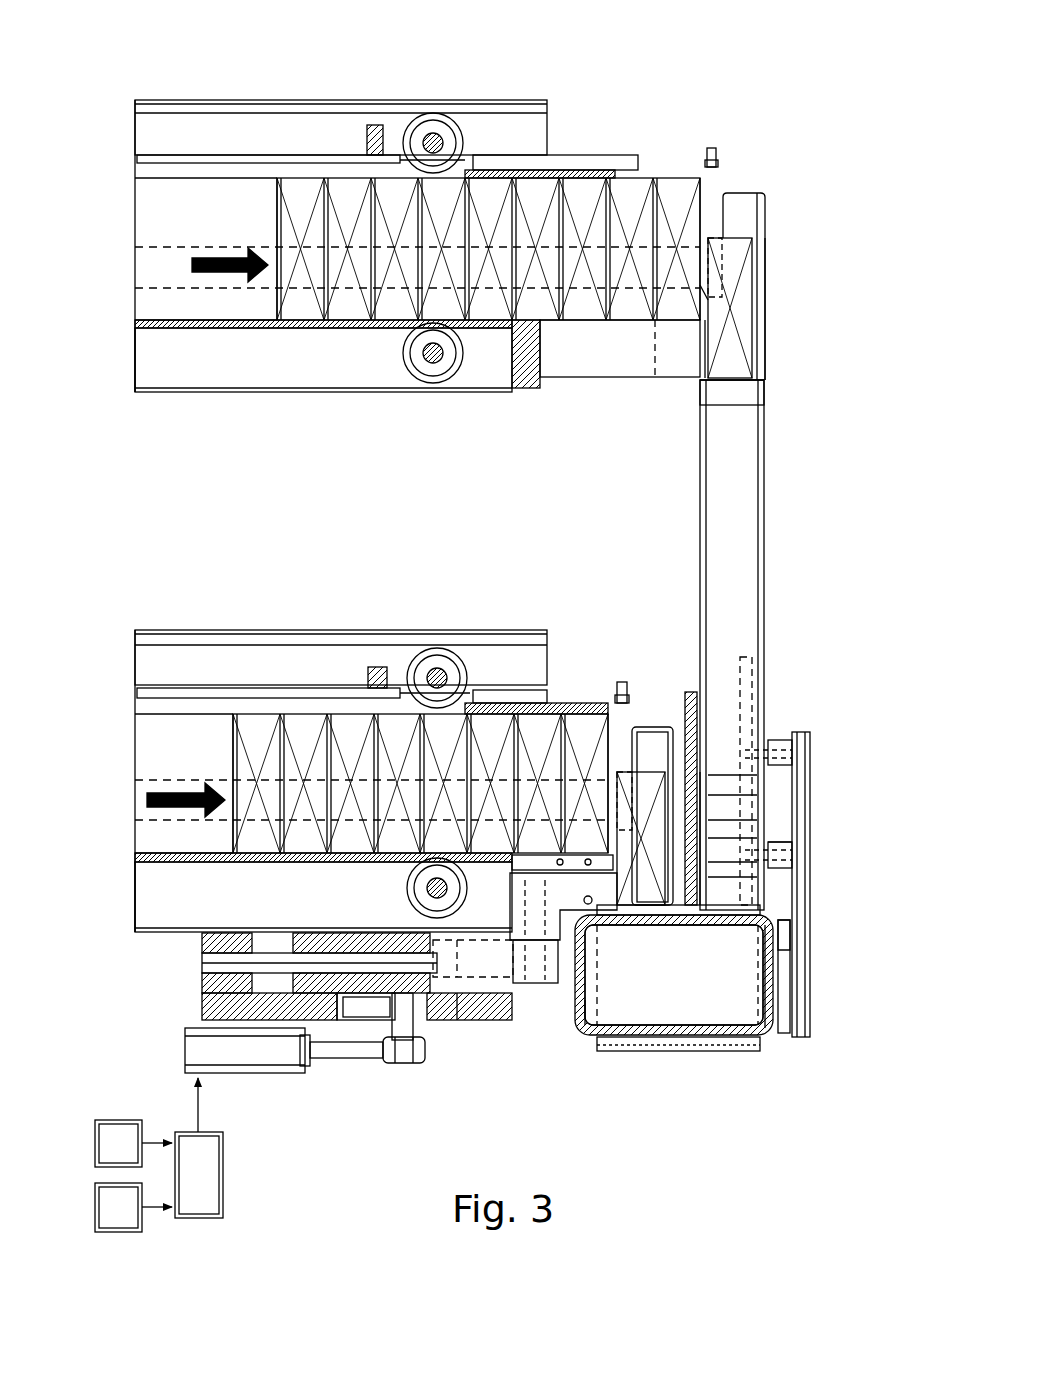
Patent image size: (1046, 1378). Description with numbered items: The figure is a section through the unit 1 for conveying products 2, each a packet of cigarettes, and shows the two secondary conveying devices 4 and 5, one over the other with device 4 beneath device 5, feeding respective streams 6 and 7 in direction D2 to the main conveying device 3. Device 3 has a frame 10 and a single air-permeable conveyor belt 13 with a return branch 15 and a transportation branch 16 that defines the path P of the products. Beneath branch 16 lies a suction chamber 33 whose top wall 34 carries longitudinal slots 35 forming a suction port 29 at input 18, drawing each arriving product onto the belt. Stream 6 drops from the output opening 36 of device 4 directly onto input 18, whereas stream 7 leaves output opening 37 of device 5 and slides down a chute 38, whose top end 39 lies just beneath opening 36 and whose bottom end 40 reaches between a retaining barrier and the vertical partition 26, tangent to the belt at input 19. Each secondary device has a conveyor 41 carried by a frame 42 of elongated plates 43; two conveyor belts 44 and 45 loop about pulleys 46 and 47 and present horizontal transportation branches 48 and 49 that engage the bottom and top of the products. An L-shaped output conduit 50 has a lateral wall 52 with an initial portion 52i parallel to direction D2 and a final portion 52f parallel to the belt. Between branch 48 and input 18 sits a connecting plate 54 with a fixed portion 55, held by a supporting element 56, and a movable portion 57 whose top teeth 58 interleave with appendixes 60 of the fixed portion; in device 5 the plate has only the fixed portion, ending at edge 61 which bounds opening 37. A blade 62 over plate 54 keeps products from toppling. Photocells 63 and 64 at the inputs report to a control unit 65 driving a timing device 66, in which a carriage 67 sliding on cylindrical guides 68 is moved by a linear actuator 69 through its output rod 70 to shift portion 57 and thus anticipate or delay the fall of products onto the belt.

The unit for conveying products 1 is at (768, 128).
The products 2 is at (290, 195).
The main conveying device 3 is at (670, 1060).
The secondary conveying device 4 is at (105, 762).
The secondary conveying device 5 is at (120, 185).
The stream of products 6 is at (228, 740).
The stream of products 7 is at (270, 218).
The frame 10 is at (800, 1045).
The conveyor belt 13 is at (745, 1055).
The return branch 15 is at (690, 1054).
The transportation branch 16 is at (700, 910).
The input 18 is at (600, 1030).
The input 19 is at (810, 852).
The vertical partition 26 is at (750, 700).
The suction port 29 is at (592, 1030).
The suction chamber 33 is at (640, 1040).
The top wall 34 is at (625, 912).
The longitudinal slots 35 is at (623, 920).
The output opening 36 is at (645, 760).
The output opening 37 is at (700, 298).
The chute 38 is at (740, 560).
The top end 39 is at (735, 402).
The bottom end 40 is at (815, 925).
The conveyor 41 is at (125, 345).
The frame 42 is at (485, 95).
The elongated plates 43 is at (318, 100).
The conveyor belt 44 is at (255, 395).
The conveyor belt 45 is at (230, 103).
The pulleys 46 is at (440, 380).
The pulleys 47 is at (433, 120).
The transportation branch 48 is at (212, 312).
The transportation branch 49 is at (152, 180).
The output conduit 50 is at (742, 195).
The lateral wall 52 is at (745, 197).
The initial portion 52i is at (742, 230).
The final portion 52f is at (762, 268).
The connecting plate 54 is at (565, 383).
The fixed portion 55 is at (612, 348).
The supporting element 56 is at (215, 1007).
The movable portion 57 is at (525, 1020).
The top teeth 58 is at (548, 983).
The appendixes 60 is at (650, 735).
The edge 61 is at (705, 345).
The blade 62 is at (668, 178).
The photocell 63 is at (622, 680).
The photocell 64 is at (710, 146).
The control unit 65 is at (200, 1165).
The timing device 66 is at (400, 1068).
The carriage 67 is at (345, 1040).
The cylindrical guides 68 is at (205, 965).
The linear actuator 69 is at (265, 1075).
The output rod 70 is at (345, 1060).
The direction D2 is at (190, 278).
The path P is at (768, 860).